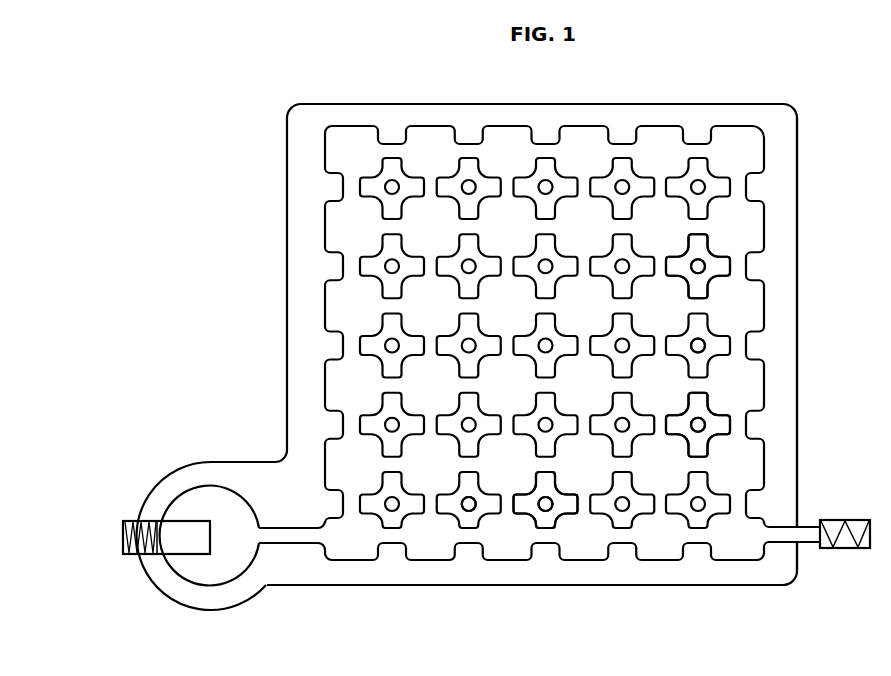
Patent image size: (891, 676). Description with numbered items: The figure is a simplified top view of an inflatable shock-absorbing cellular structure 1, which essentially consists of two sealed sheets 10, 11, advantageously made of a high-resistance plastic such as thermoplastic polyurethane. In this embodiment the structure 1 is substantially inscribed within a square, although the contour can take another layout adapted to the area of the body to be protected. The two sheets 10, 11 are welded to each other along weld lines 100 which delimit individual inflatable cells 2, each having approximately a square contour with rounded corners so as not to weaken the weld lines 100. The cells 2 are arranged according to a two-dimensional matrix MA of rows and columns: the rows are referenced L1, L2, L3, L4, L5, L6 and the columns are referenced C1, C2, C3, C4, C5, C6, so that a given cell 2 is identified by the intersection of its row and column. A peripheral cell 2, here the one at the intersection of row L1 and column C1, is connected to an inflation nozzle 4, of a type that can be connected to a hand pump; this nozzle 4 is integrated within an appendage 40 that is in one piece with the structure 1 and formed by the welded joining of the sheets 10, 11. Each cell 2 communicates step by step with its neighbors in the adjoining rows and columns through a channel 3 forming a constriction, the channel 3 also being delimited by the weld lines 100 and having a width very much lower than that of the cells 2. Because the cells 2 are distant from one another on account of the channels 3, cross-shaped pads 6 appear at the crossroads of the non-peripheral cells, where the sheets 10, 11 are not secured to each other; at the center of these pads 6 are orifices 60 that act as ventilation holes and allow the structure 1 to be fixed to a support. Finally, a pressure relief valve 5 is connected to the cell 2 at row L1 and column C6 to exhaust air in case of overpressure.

The inflatable shock-absorbing cellular structure 1 is at (201, 235).
The inflatable cell 2 is at (432, 116).
The channel 3 is at (698, 308).
The inflation nozzle 4 is at (178, 514).
The pressure relief valve 5 is at (845, 514).
The pad 6 is at (723, 345).
The sheet 10 is at (700, 103).
The sheet 11 is at (747, 103).
The appendage 40 is at (210, 601).
The orifice 60 is at (468, 512).
The weld line 100 is at (663, 125).
The two-dimensional matrix MA is at (814, 307).
The row L1 is at (290, 513).
The row L2 is at (308, 463).
The row L3 is at (309, 383).
The row L4 is at (309, 305).
The row L5 is at (309, 231).
The row L6 is at (309, 154).
The column C1 is at (350, 577).
The column C2 is at (427, 577).
The column C3 is at (505, 577).
The column C4 is at (582, 577).
The column C5 is at (660, 577).
The column C6 is at (738, 577).